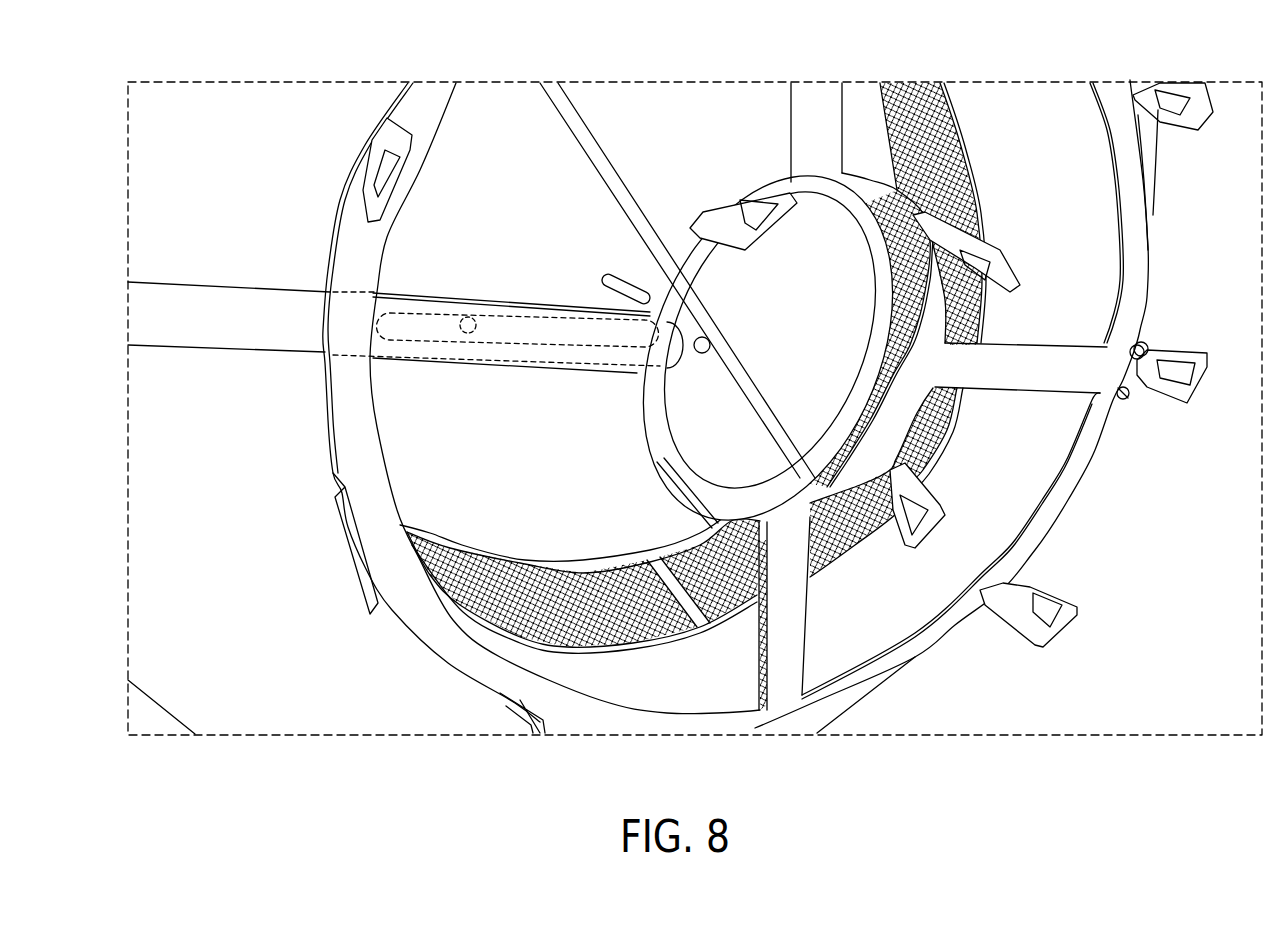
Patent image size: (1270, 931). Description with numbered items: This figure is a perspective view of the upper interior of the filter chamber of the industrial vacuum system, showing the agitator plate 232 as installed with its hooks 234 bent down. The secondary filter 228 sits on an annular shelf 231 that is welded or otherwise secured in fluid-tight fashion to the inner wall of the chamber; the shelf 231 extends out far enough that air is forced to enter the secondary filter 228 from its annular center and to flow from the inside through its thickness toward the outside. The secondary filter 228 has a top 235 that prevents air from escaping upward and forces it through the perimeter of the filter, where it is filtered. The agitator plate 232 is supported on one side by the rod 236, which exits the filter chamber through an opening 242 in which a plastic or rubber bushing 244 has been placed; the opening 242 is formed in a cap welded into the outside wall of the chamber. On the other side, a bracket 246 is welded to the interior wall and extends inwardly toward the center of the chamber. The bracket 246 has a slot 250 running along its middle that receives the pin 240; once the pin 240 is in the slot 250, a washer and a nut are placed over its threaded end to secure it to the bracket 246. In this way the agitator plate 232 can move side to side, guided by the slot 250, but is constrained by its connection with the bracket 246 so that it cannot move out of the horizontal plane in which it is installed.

The secondary filter 228 is at (550, 590).
The annular shelf 231 is at (593, 687).
The agitator plate 232 is at (450, 665).
The hooks 234 is at (740, 240).
The top 235 is at (693, 112).
The rod 236 is at (1127, 373).
The pin 240 is at (467, 316).
The opening 242 is at (1142, 360).
The bushing 244 is at (1137, 390).
The bracket 246 is at (234, 297).
The slot 250 is at (560, 312).